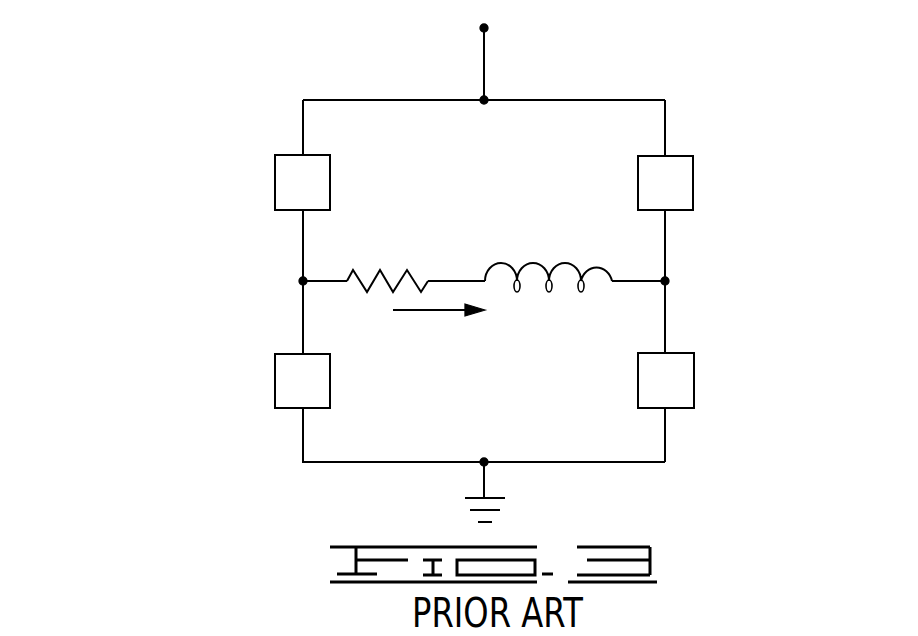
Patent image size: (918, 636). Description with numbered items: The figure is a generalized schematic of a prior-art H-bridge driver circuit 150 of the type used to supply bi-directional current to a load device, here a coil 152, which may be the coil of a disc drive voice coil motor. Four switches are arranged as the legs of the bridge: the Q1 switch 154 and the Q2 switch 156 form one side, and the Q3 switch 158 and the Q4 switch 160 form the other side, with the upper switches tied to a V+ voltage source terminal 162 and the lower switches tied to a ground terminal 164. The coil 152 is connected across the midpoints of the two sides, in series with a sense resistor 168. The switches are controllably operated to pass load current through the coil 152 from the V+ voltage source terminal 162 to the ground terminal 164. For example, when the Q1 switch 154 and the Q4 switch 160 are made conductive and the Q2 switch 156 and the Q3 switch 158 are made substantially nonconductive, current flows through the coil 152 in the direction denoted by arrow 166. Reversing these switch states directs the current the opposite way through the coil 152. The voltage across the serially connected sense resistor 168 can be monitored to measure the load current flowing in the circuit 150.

The H-bridge driver circuit 150 is at (219, 103).
The coil 152 is at (532, 263).
The Q1 switch 154 is at (315, 158).
The Q2 switch 156 is at (330, 392).
The Q3 switch 158 is at (678, 158).
The Q4 switch 160 is at (677, 355).
The V+ voltage source terminal 162 is at (482, 27).
The ground terminal 164 is at (499, 496).
The arrow 166 is at (438, 313).
The sense resistor 168 is at (383, 270).